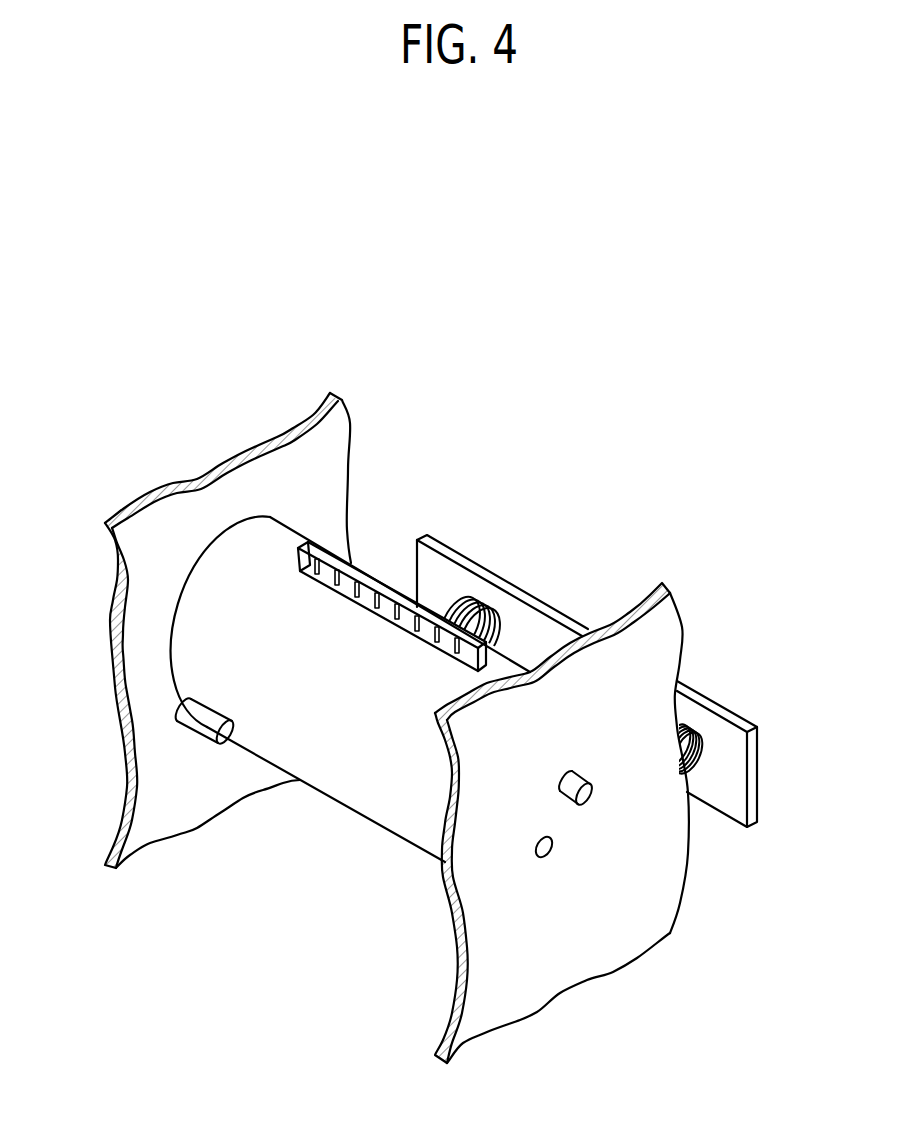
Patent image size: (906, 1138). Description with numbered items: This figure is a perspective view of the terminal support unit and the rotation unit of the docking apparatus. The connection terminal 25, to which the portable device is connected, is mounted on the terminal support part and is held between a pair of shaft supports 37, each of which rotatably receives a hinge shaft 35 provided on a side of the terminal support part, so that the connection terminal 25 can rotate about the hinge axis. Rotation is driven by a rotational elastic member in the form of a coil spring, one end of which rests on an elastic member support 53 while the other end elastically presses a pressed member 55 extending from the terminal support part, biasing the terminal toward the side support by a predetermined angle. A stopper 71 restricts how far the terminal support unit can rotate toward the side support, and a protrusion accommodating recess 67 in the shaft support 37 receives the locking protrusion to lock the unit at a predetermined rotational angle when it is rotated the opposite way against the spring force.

The connection terminal 25 is at (357, 570).
The hinge shaft 35 is at (593, 797).
The shaft support 37 is at (345, 422).
The elastic member support 53 is at (755, 770).
The pressed member 55 is at (390, 722).
The protrusion accommodating recess 67 is at (535, 853).
The stopper 71 is at (193, 723).